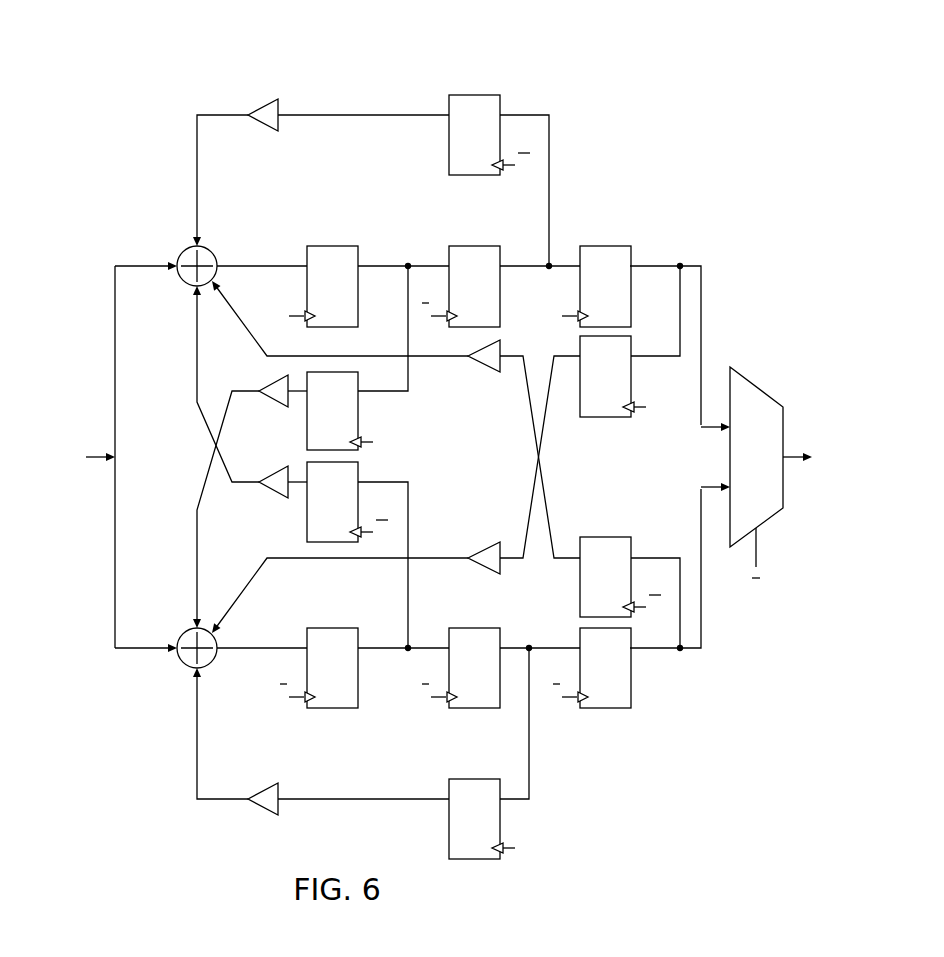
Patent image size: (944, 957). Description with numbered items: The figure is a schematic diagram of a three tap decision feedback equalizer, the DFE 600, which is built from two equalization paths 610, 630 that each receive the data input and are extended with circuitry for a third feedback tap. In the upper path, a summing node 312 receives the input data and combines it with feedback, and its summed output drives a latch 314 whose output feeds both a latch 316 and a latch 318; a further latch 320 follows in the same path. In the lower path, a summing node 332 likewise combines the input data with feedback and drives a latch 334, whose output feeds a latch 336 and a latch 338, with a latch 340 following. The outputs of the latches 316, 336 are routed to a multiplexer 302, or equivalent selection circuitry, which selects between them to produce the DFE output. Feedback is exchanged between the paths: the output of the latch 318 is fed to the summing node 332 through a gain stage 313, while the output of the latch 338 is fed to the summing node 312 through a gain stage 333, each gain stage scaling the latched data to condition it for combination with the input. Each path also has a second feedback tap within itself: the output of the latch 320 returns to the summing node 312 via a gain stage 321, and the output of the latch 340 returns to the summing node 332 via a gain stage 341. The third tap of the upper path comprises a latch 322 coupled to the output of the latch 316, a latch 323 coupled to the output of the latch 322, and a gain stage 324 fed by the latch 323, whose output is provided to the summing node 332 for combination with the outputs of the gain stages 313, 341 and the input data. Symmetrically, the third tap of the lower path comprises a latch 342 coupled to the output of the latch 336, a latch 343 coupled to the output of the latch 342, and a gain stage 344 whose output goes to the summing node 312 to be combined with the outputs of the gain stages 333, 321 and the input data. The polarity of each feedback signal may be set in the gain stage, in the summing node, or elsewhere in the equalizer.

The three tap DFE 600 is at (784, 212).
The equalization path 610 is at (181, 149).
The equalization path 630 is at (182, 766).
The multiplexer 302 is at (765, 390).
The summing node 312 is at (185, 252).
The summing node 332 is at (185, 665).
The gain stage 313 is at (274, 406).
The gain stage 333 is at (274, 496).
The gain stage 321 is at (265, 100).
The gain stage 341 is at (263, 812).
The gain stage 344 is at (484, 373).
The gain stage 324 is at (484, 545).
The latch 314 is at (334, 246).
The latch 316 is at (476, 246).
The latch 318 is at (358, 413).
The latch 320 is at (477, 95).
The latch 322 is at (606, 246).
The latch 323 is at (606, 418).
The latch 334 is at (331, 709).
The latch 336 is at (473, 709).
The latch 338 is at (330, 543).
The latch 340 is at (476, 860).
The latch 342 is at (604, 709).
The latch 343 is at (606, 537).